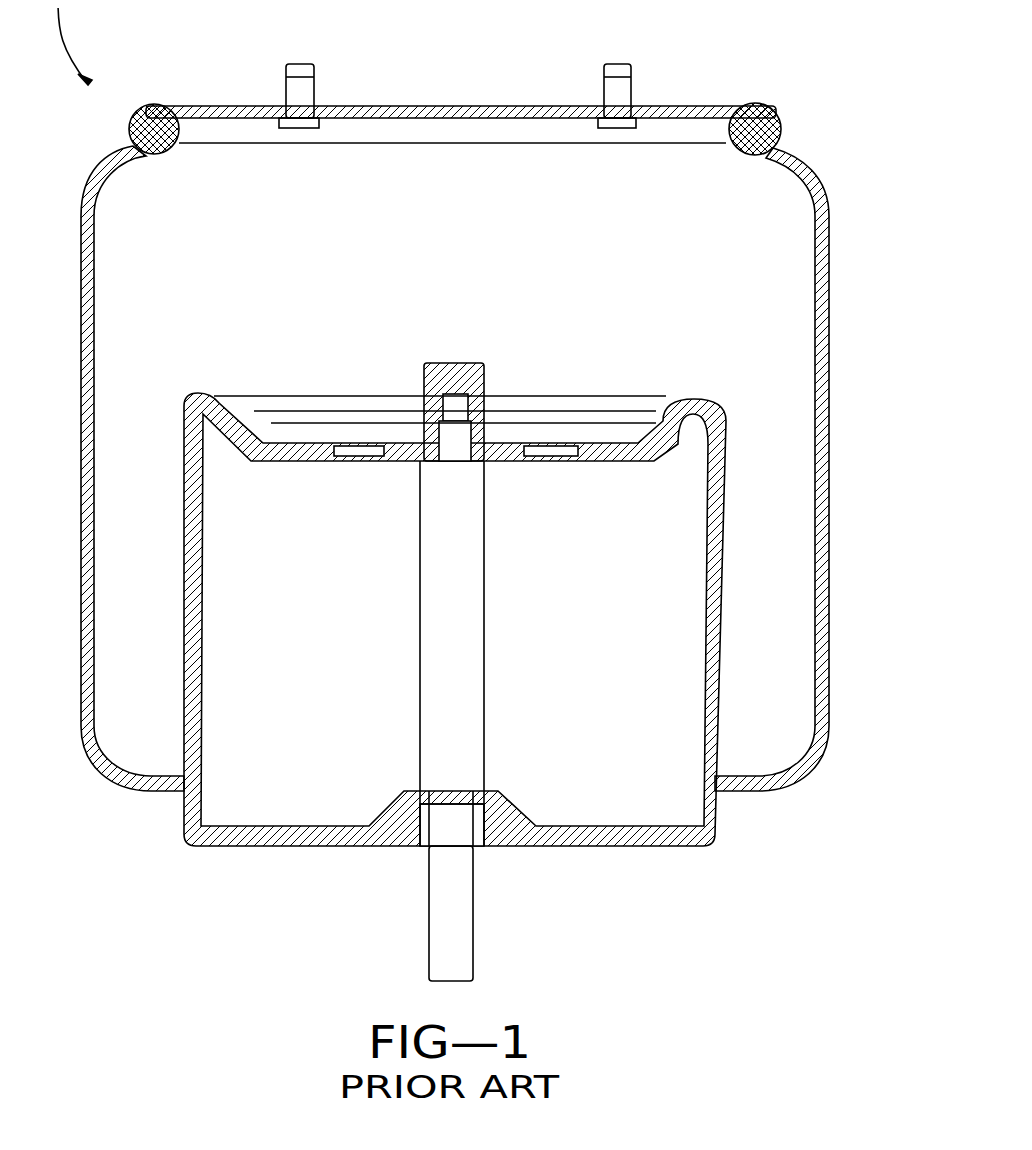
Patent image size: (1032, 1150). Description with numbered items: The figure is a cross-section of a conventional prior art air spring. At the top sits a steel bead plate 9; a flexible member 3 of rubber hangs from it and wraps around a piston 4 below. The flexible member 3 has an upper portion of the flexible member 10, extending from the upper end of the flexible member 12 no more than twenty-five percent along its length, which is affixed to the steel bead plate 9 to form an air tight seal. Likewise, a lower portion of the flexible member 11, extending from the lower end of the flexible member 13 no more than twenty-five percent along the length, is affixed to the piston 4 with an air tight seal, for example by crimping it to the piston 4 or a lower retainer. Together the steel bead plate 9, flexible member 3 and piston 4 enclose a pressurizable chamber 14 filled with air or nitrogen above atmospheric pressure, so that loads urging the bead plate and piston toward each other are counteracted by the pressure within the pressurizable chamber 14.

The flexible member 3 is at (827, 328).
The piston 4 is at (596, 652).
The steel bead plate 9 is at (395, 105).
The upper portion of the flexible member 10 is at (745, 118).
The lower portion of the flexible member 11 is at (670, 428).
The upper end of the flexible member 12 is at (760, 134).
The lower end of the flexible member 13 is at (650, 455).
The pressurizable chamber 14 is at (627, 278).